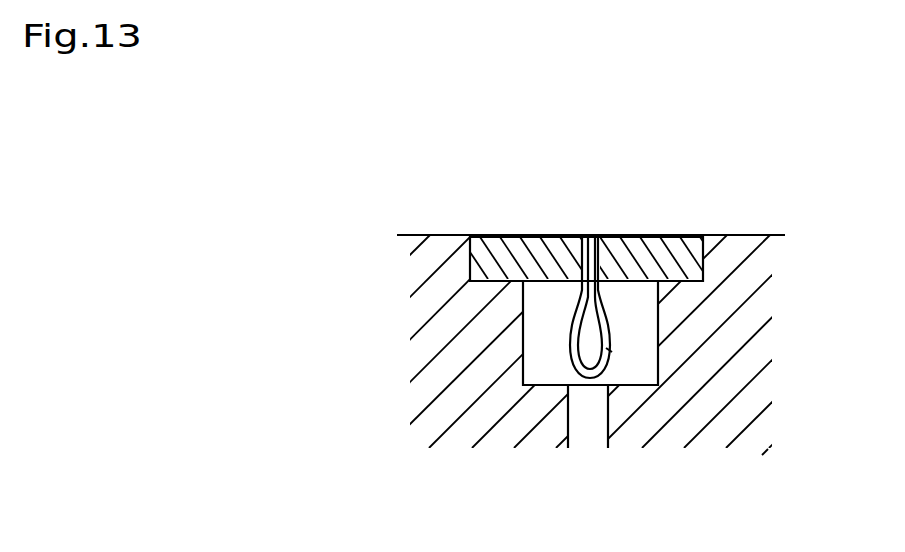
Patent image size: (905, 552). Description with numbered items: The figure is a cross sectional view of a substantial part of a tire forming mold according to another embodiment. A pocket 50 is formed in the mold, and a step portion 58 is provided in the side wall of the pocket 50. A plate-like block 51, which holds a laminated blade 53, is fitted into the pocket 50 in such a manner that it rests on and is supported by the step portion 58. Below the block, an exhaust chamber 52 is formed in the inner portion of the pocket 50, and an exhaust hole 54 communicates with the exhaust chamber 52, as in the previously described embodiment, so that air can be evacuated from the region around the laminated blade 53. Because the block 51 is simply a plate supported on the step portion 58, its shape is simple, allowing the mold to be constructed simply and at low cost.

The pocket 50 is at (658, 335).
The plate-like block 51 is at (515, 238).
The exhaust chamber 52 is at (543, 365).
The laminated blade 53 is at (610, 351).
The exhaust hole 54 is at (593, 435).
The step portion 58 is at (486, 282).